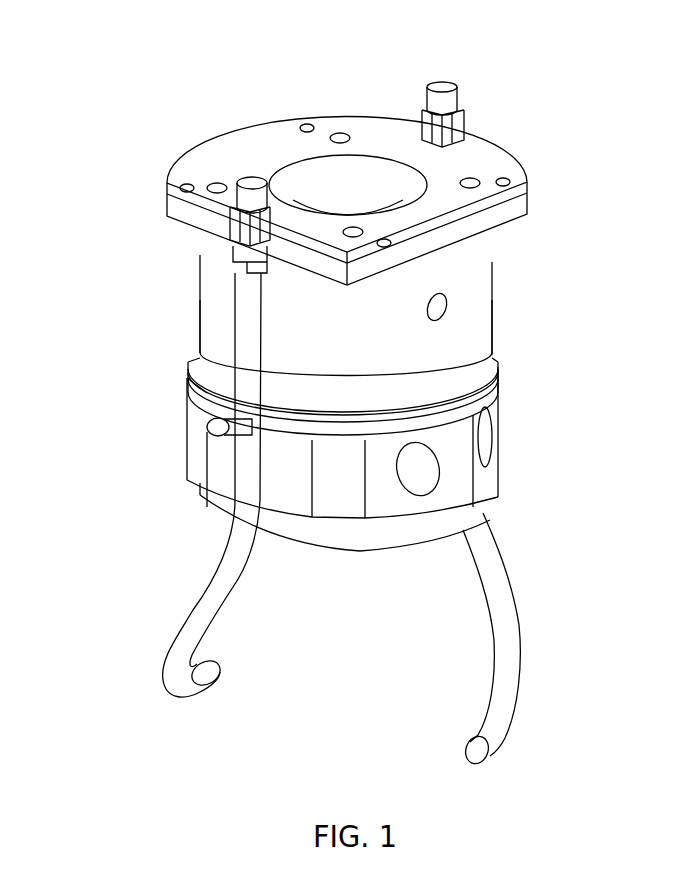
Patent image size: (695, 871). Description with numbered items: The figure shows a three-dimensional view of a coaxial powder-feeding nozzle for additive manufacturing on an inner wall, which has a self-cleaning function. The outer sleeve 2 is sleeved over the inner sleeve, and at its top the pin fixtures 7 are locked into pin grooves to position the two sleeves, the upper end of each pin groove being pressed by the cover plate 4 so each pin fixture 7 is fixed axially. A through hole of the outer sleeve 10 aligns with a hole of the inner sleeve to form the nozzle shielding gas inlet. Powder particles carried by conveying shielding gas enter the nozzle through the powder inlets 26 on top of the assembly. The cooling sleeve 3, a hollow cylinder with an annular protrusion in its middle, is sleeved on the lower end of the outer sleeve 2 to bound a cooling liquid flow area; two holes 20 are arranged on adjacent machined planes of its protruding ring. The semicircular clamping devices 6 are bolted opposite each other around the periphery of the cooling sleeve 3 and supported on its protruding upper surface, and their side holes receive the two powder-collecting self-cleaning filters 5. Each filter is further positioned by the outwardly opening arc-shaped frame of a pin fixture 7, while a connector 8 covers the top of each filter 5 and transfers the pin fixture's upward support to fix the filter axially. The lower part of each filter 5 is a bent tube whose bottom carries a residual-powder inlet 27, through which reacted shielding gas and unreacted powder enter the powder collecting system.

The outer sleeve 2 is at (492, 317).
The cooling sleeve 3 is at (502, 383).
The cover plate 4 is at (525, 185).
The powder-collecting self-cleaning filter 5 is at (237, 322).
The clamping device 6 is at (200, 367).
The pin fixture 7 is at (238, 265).
The connector 8 is at (460, 110).
The through hole of outer sleeve 10 is at (440, 290).
The hole in cooling sleeve 20 is at (420, 468).
The powder inlet 26 is at (468, 181).
The residual-powder inlet of powder collecting tube 27 is at (467, 745).